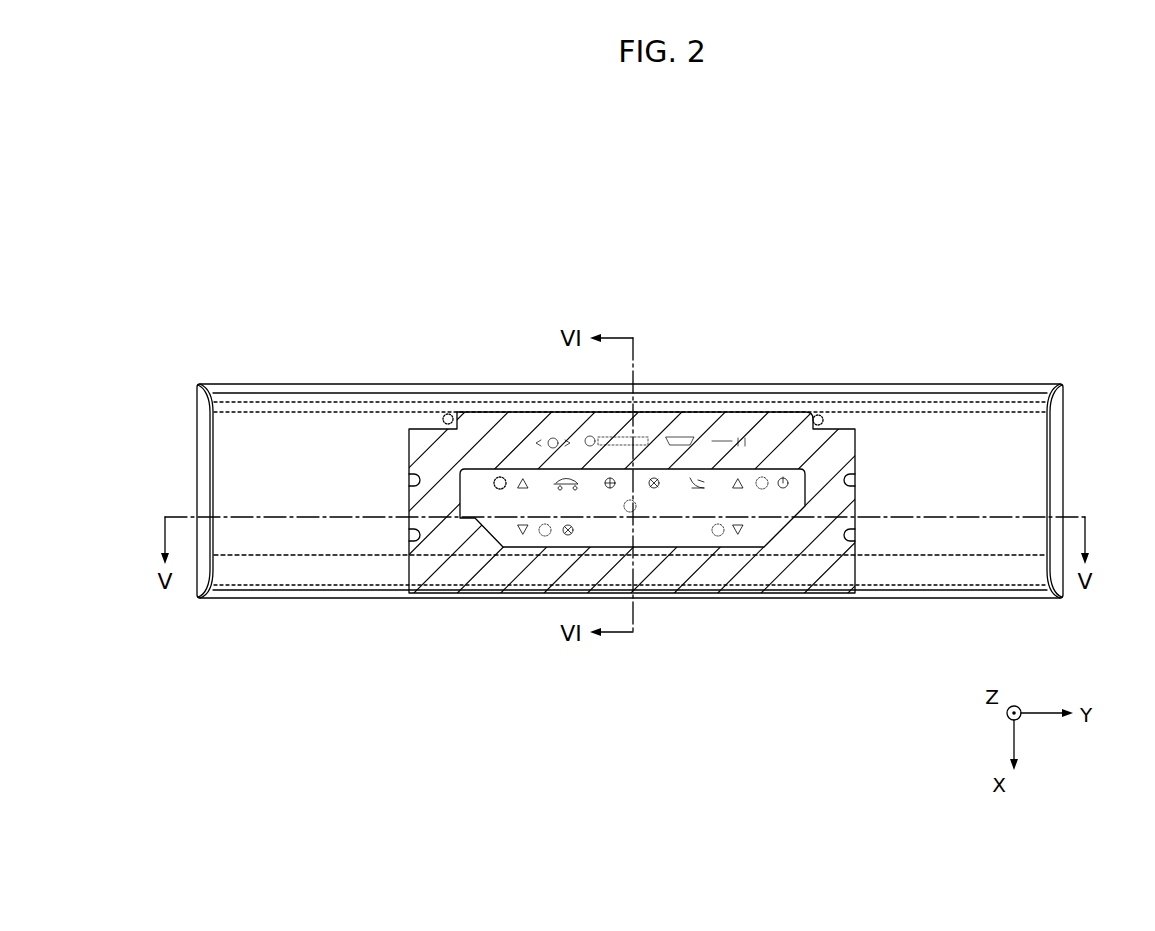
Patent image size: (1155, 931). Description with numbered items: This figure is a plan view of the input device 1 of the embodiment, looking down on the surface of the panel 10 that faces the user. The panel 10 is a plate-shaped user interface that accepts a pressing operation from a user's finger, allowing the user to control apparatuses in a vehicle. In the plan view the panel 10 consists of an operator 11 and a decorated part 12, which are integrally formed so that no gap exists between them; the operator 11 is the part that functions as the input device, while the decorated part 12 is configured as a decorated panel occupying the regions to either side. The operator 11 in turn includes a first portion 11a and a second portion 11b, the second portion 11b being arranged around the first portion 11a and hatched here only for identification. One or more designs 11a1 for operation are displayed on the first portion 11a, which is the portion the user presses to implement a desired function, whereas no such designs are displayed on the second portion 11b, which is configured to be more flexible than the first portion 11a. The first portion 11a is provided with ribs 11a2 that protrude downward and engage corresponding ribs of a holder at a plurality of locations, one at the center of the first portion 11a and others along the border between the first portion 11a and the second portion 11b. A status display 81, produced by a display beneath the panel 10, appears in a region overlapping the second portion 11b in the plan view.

The input device 1 is at (1102, 345).
The panel 10 is at (1064, 418).
The decorated part 12 is at (308, 371).
The operator 11 is at (782, 659).
The first portion 11a is at (746, 550).
The design 11a1 is at (769, 509).
The rib 11a2 is at (500, 473).
The second portion 11b is at (697, 595).
The status display 81 is at (509, 424).